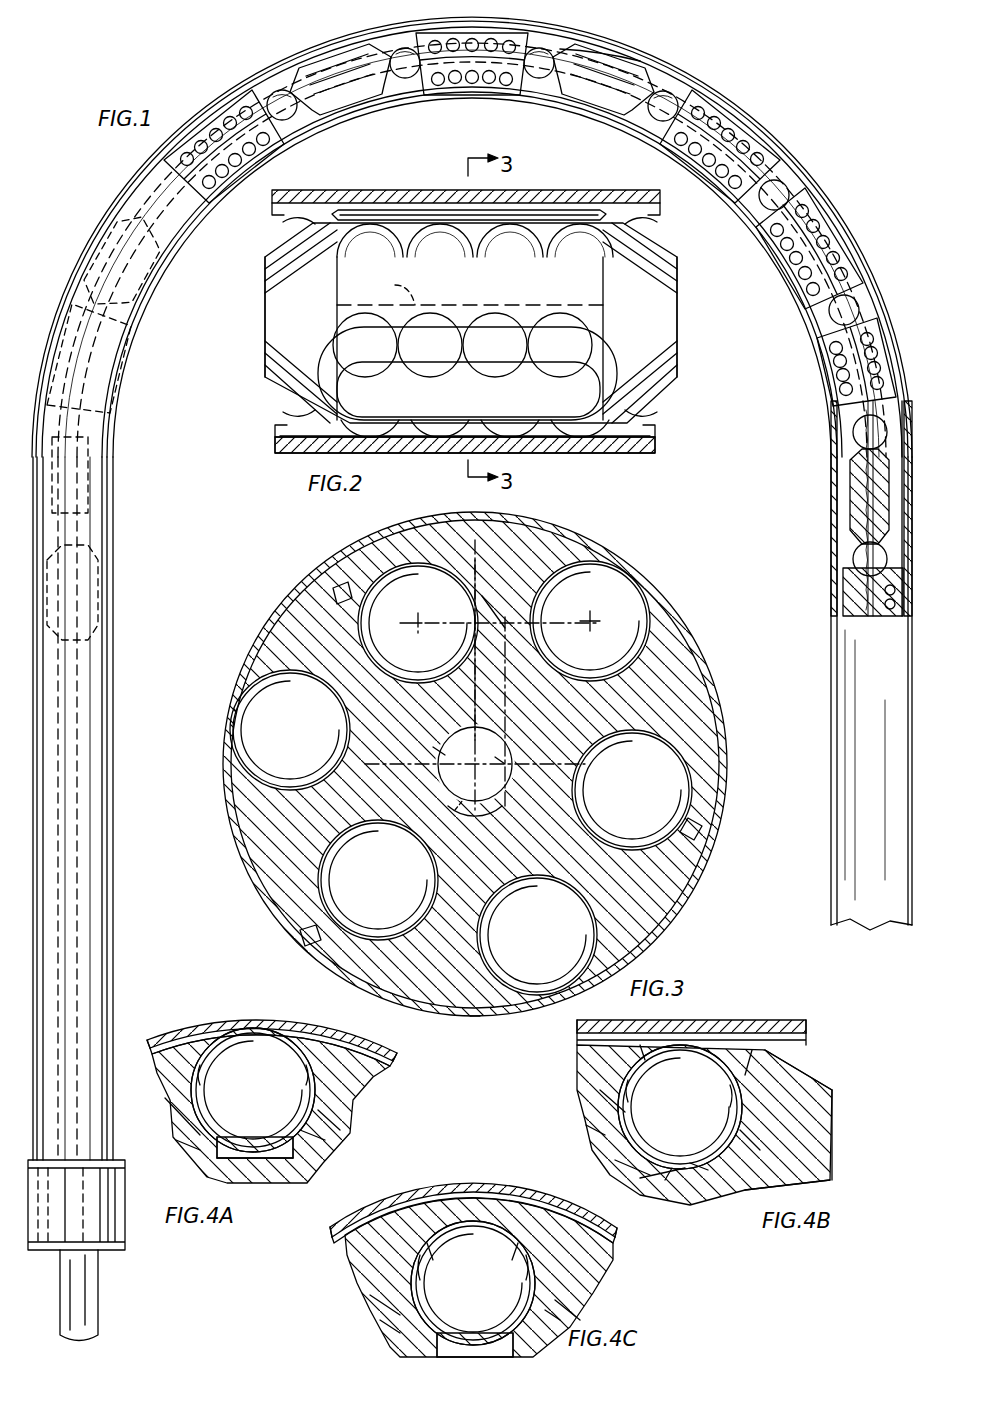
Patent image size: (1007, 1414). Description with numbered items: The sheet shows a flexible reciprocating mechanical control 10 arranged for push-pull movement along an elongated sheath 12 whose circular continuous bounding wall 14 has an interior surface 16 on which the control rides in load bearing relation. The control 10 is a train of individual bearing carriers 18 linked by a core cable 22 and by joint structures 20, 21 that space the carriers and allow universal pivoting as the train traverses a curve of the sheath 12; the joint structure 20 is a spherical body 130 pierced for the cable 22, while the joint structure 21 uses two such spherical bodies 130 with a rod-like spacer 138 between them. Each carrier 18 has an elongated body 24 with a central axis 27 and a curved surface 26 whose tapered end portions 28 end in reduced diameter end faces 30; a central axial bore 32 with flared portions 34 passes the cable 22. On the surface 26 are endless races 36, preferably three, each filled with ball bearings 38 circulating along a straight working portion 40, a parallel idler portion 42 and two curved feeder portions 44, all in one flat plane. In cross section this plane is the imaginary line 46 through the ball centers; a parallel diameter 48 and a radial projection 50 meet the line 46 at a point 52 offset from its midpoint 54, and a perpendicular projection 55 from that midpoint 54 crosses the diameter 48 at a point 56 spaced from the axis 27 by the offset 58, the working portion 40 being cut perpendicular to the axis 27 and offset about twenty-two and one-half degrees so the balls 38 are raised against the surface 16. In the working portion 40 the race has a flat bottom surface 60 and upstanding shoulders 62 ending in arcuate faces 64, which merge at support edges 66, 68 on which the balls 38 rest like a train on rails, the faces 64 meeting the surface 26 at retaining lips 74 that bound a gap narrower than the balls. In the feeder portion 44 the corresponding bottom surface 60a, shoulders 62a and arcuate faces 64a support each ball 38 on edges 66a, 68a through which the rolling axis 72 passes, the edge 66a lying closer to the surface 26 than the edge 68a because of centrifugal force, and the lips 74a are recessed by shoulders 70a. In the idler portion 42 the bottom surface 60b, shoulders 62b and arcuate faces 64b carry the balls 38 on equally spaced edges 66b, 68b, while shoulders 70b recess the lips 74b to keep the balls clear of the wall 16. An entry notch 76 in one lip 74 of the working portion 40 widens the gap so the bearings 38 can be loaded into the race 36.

In FIG. 1, the mechanical control 10 is at (727, 80).
In FIG. 1, the sheath 12 is at (668, 12).
In FIG. 2, the sheath 12 is at (552, 454).
In FIG. 3, the sheath 12 is at (455, 1024).
In FIG. 1, the bounding wall 14 is at (798, 330).
In FIG. 2, the bounding wall 14 is at (362, 190).
In FIG. 3, the bounding wall 14 is at (478, 1020).
In FIG. 4A, the bounding wall 14 is at (188, 1031).
In FIG. 4B, the bounding wall 14 is at (738, 1028).
In FIG. 4C, the bounding wall 14 is at (594, 1227).
In FIG. 1, the interior surface 16 is at (762, 235).
In FIG. 2, the interior surface 16 is at (656, 204).
In FIG. 3, the interior surface 16 is at (503, 1008).
In FIG. 4A, the interior surface 16 is at (210, 1040).
In FIG. 4B, the interior surface 16 is at (692, 1037).
In FIG. 4C, the interior surface 16 is at (355, 1215).
In FIG. 1, the bearing carrier 18 is at (461, 97).
In FIG. 2, the bearing carrier 18 is at (471, 325).
In FIG. 3, the bearing carrier 18 is at (468, 773).
In FIG. 1, the joint structure 20 is at (790, 189).
In FIG. 1, the joint structure 21 is at (357, 110).
In FIG. 1, the core cable 22 is at (850, 520).
In FIG. 2, the carrier body 24 is at (312, 292).
In FIG. 3, the carrier body 24 is at (548, 853).
In FIG. 4A, the carrier body 24 is at (207, 1165).
In FIG. 4B, the carrier body 24 is at (814, 1125).
In FIG. 4C, the carrier body 24 is at (584, 1285).
In FIG. 2, the curved surface 26 is at (278, 434).
In FIG. 3, the curved surface 26 is at (520, 540).
In FIG. 4A, the curved surface 26 is at (178, 1052).
In FIG. 4B, the curved surface 26 is at (630, 1050).
In FIG. 4C, the curved surface 26 is at (565, 1222).
In FIG. 3, the central axis 27 is at (475, 675).
In FIG. 2, the tapered end portions 28 is at (285, 365).
In FIG. 4B, the tapered end portions 28 is at (812, 1072).
In FIG. 2, the end faces 30 is at (268, 382).
In FIG. 4B, the end faces 30 is at (832, 1130).
In FIG. 2, the central axial bore 32 is at (470, 287).
In FIG. 3, the central axial bore 32 is at (455, 810).
In FIG. 2, the flared portions 34 is at (640, 361).
In FIG. 2, the endless race 36 is at (612, 225).
In FIG. 2, the bearing elements 38 is at (557, 251).
In FIG. 3, the bearing elements 38 is at (408, 572).
In FIG. 4A, the bearing elements 38 is at (265, 1123).
In FIG. 4B, the bearing elements 38 is at (689, 1085).
In FIG. 4C, the bearing elements 38 is at (470, 1230).
In FIG. 3, the working portion 40 is at (635, 612).
In FIG. 4A, the working portion 40 is at (299, 1090).
In FIG. 3, the idler portion 42 is at (333, 590).
In FIG. 2, the curved feeder portions 44 is at (270, 223).
In FIG. 4B, the curved feeder portions 44 is at (853, 1126).
In FIG. 3, the race plane line 46 is at (493, 603).
In FIG. 3, the cross-sectional diameter 48 is at (433, 747).
In FIG. 3, the radial projection 50 is at (473, 707).
In FIG. 3, the point 52 is at (421, 626).
In FIG. 3, the midpoint 54 is at (533, 630).
In FIG. 3, the perpendicular projection 55 is at (508, 707).
In FIG. 3, the point 56 is at (500, 757).
In FIG. 3, the offset 58 is at (467, 803).
In FIG. 4A, the flat bottom surface 60 is at (270, 1155).
In FIG. 4B, the slot bottom 60a is at (670, 1175).
In FIG. 4C, the slot bottom 60b is at (440, 1340).
In FIG. 4A, the shoulders 62 is at (290, 1145).
In FIG. 4B, the slot wall 62a is at (615, 1160).
In FIG. 4C, the slot wall 62b is at (510, 1325).
In FIG. 4A, the arcuate faces 64 is at (180, 1108).
In FIG. 4B, the pocket side wall 64a is at (600, 1090).
In FIG. 4C, the arcuate faces 64b is at (420, 1293).
In FIG. 4A, the support edge 66 is at (190, 1140).
In FIG. 4B, the support edge 66a is at (586, 1125).
In FIG. 4C, the support edge 66b is at (380, 1323).
In FIG. 4A, the support edge 68 is at (318, 1135).
In FIG. 4B, the support edge 68a is at (700, 1165).
In FIG. 4C, the support edge 68b is at (558, 1305).
In FIG. 4B, the shoulders 70a is at (745, 1078).
In FIG. 4C, the shoulders 70b is at (432, 1240).
In FIG. 4B, the rolling axis 72 is at (650, 1145).
In FIG. 4A, the retaining lips 74 is at (212, 1050).
In FIG. 4B, the retaining lips 74a is at (650, 1064).
In FIG. 4C, the retaining lips 74b is at (420, 1260).
In FIG. 2, the entry notch 76 is at (462, 226).
In FIG. 1, the spherical body 130 is at (545, 50).
In FIG. 1, the spacer 138 is at (628, 72).